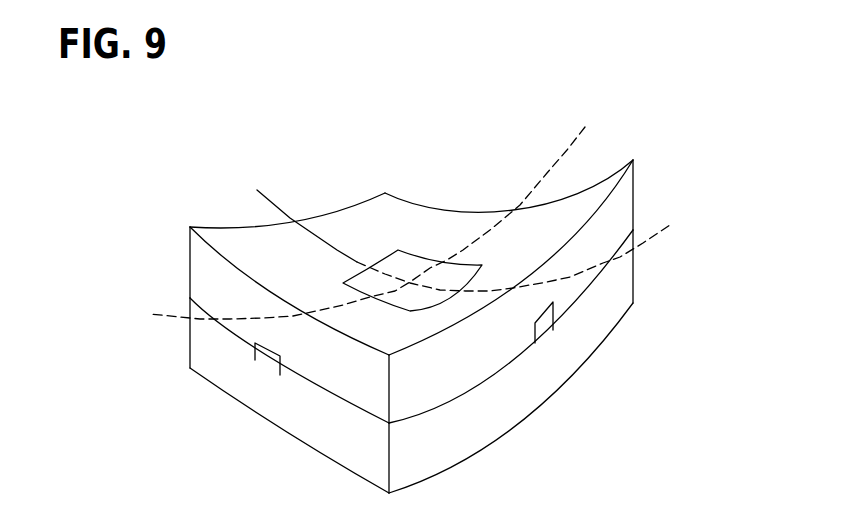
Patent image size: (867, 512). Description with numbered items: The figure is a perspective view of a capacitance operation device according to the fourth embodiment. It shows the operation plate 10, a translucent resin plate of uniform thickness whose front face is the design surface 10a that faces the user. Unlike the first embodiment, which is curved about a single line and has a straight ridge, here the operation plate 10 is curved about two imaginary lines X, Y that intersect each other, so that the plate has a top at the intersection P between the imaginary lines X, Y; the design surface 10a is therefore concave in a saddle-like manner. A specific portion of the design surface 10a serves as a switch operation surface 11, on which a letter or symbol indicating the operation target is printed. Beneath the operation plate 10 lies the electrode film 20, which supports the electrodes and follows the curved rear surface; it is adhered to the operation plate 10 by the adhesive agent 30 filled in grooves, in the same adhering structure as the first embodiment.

The operation plate 10 is at (381, 291).
The design surface 10a is at (236, 258).
The switch operation surface 11 is at (406, 258).
The electrode film 20 is at (212, 340).
The adhesive agent 30 is at (268, 357).
The intersection P is at (410, 280).
The imaginary line X is at (473, 240).
The imaginary line Y is at (372, 208).